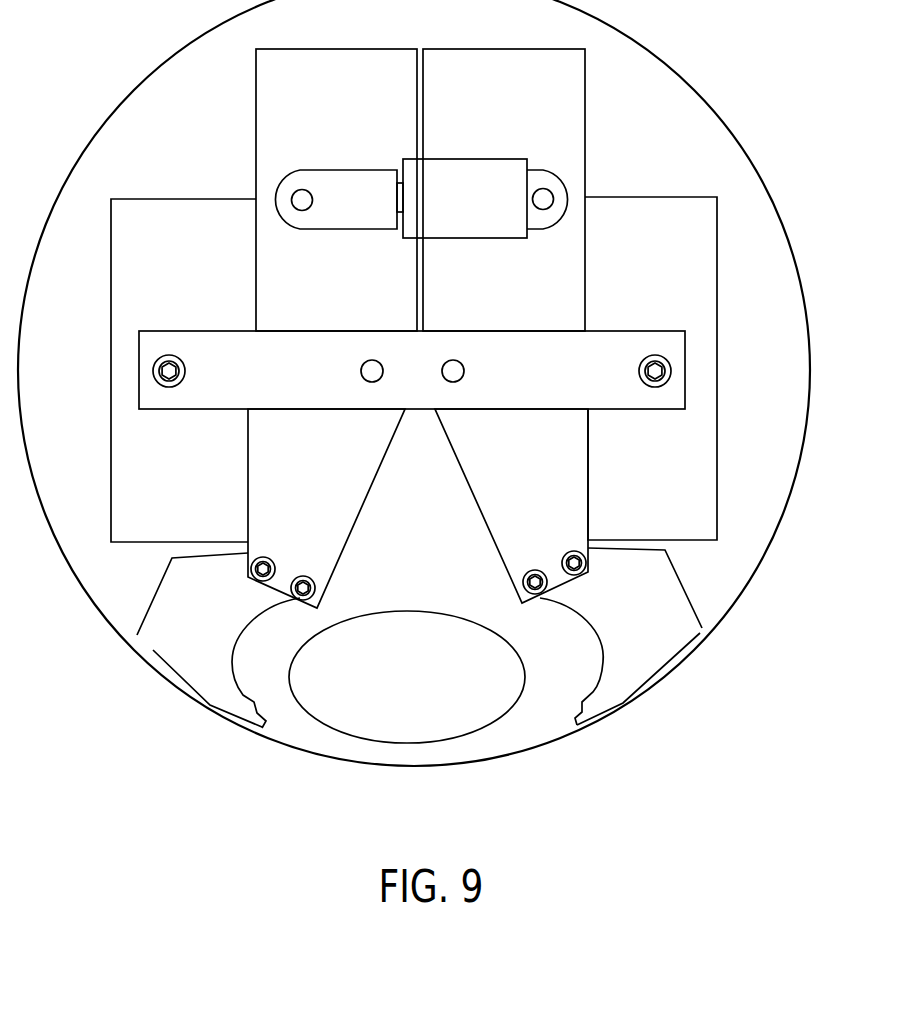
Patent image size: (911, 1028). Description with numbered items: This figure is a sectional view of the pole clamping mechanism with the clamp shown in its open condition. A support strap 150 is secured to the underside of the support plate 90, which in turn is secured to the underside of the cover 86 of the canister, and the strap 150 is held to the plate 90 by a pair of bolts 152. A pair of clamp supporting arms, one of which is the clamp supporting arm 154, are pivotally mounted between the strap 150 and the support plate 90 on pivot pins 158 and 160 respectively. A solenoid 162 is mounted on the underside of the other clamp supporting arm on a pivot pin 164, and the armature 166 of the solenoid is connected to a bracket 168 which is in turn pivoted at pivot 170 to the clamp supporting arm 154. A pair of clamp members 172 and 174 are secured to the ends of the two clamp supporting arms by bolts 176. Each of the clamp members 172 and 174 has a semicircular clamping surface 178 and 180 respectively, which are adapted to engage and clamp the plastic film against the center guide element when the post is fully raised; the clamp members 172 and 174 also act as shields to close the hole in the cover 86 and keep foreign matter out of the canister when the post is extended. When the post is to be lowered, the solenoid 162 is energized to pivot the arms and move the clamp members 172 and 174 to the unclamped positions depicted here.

The cover 86 is at (800, 320).
The support plate 90 is at (698, 475).
The support strap 150 is at (635, 337).
The bolts 152 is at (167, 376).
The clamp supporting arm 154 is at (268, 292).
The pivot pin 158 is at (372, 374).
The pivot pin 160 is at (453, 374).
The solenoid 162 is at (495, 172).
The pivot pin 164 is at (543, 204).
The armature 166 is at (402, 170).
The bracket 168 is at (283, 217).
The pivot 170 is at (302, 205).
The clamp member 172 is at (147, 652).
The clamp member 174 is at (683, 640).
The bolts 176 is at (306, 578).
The semicircular clamping surface 178 is at (235, 655).
The semicircular clamping surface 180 is at (583, 630).